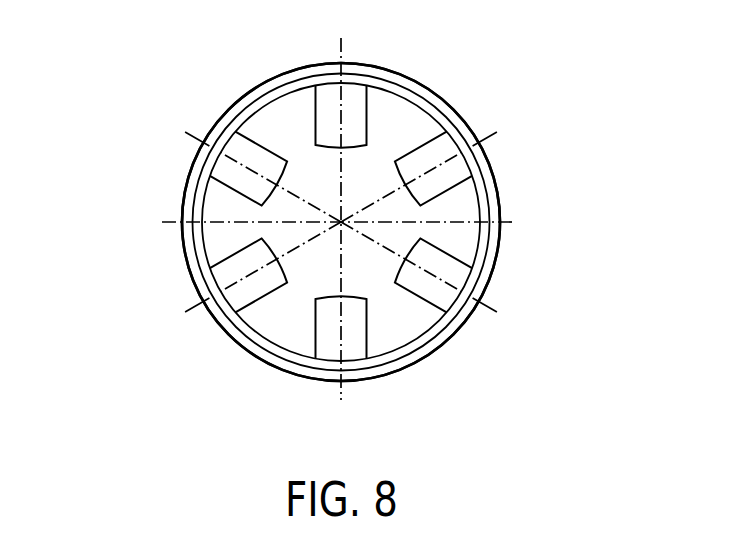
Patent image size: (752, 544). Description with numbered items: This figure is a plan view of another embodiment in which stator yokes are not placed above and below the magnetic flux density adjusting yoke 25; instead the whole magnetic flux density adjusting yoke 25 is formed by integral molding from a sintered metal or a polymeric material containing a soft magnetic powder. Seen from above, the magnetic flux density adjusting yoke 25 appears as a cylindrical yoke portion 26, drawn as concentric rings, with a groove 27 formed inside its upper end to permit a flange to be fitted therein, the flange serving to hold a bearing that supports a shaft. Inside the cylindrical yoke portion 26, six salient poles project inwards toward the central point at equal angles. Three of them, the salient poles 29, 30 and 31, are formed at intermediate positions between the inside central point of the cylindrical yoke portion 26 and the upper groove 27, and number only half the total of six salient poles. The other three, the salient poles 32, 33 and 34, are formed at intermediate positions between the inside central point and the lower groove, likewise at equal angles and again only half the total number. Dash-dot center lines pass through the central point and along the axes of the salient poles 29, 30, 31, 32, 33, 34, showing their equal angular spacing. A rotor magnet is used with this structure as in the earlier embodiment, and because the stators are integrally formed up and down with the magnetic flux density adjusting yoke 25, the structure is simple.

The magnetic flux density adjusting yoke 25 is at (143, 232).
The cylindrical yoke portion 26 is at (498, 203).
The groove 27 is at (428, 101).
The salient pole 29 is at (348, 90).
The salient pole 30 is at (450, 273).
The salient pole 31 is at (228, 282).
The salient pole 32 is at (452, 165).
The salient pole 33 is at (352, 342).
The salient pole 34 is at (238, 155).